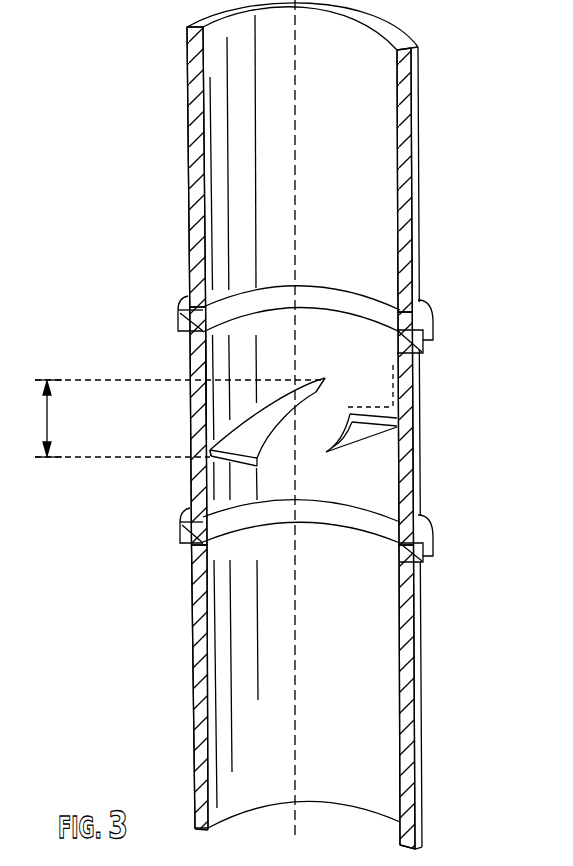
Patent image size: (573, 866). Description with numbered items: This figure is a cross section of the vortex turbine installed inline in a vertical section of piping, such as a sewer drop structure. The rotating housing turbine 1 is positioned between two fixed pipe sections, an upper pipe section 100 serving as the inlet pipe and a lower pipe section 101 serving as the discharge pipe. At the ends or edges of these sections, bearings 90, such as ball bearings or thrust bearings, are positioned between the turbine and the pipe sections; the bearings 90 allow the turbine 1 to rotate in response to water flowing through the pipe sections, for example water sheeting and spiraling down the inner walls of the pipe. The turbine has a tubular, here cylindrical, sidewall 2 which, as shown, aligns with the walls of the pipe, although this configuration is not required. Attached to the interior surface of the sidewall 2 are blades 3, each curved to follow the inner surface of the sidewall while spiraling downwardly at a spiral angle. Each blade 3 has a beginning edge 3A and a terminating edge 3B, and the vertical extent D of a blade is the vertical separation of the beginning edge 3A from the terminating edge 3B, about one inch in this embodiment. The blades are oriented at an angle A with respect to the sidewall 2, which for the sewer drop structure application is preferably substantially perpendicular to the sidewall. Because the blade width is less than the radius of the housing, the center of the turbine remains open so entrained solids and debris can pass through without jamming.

The upper pipe section 100 is at (415, 165).
The lower pipe section 101 is at (422, 700).
The bearings 90 is at (432, 340).
The turbine 1 is at (432, 437).
The sidewall 2 is at (200, 388).
The blade 3 is at (238, 445).
The beginning edge 3A is at (323, 378).
The terminating edge 3B is at (240, 468).
The blade orientation angle A is at (372, 396).
The vertical extent of blade D is at (177, 418).